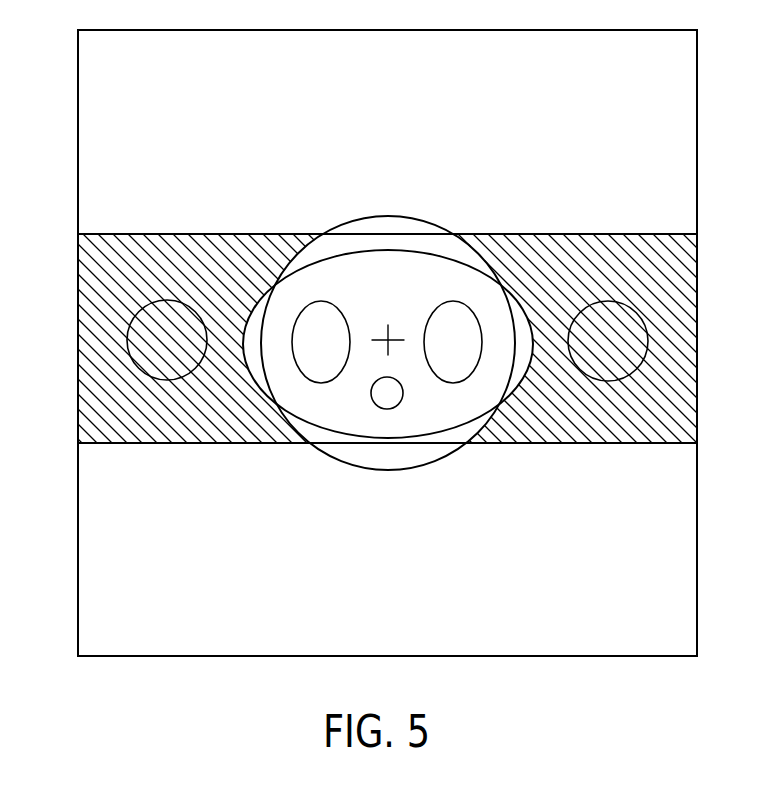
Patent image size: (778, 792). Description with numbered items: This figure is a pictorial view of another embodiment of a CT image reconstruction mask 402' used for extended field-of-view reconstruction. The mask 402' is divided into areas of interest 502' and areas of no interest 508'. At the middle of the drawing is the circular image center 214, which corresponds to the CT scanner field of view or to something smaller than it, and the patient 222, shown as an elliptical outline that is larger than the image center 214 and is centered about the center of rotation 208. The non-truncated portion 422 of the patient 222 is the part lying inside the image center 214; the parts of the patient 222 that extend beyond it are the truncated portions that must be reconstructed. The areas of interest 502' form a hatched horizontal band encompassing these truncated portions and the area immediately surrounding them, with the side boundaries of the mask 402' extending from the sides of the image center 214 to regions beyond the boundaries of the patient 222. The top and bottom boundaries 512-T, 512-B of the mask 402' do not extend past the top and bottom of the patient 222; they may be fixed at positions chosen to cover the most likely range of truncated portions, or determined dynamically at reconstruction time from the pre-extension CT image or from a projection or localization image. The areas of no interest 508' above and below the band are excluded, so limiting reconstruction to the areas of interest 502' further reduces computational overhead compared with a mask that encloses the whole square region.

The areas of no interest 508' is at (387, 343).
The top boundary of the reconstruction mask 512-T is at (110, 223).
The bottom boundary of the reconstruction mask 512-B is at (110, 453).
The CT image reconstruction mask 402' is at (384, 338).
The areas of interest 502' is at (395, 366).
The image center 214 is at (408, 216).
The patient 222 is at (521, 384).
The non-truncated portion of the patient 422 is at (478, 317).
The center of rotation 208 is at (396, 337).